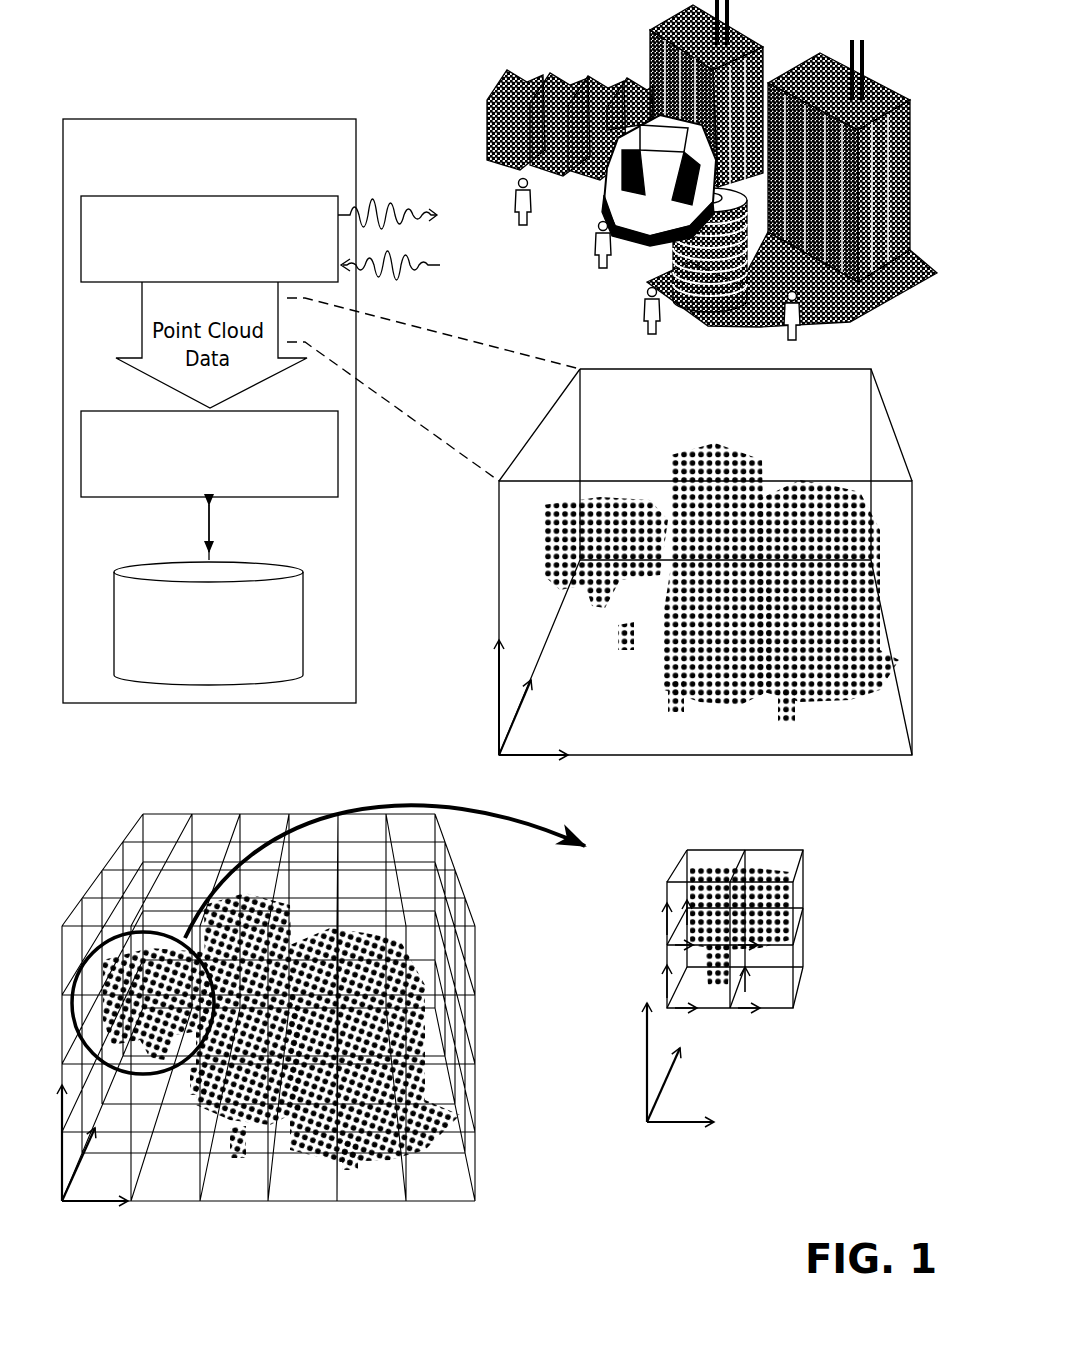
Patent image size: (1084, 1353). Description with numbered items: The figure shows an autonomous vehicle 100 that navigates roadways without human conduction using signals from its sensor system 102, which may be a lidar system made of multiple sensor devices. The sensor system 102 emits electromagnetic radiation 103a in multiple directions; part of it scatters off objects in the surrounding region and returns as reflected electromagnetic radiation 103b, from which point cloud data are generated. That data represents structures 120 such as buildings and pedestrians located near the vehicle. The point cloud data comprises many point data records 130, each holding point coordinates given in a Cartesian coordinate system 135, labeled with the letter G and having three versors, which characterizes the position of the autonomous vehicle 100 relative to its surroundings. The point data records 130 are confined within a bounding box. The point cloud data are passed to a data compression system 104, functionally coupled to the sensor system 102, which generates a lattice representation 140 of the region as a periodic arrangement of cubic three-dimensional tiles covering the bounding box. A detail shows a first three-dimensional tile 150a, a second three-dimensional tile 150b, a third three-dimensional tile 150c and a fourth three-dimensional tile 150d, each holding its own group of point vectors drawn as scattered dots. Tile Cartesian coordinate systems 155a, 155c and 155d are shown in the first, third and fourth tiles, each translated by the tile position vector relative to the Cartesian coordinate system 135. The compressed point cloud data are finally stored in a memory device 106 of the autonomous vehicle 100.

The autonomous vehicle 100 is at (206, 118).
The sensor system 102 is at (140, 196).
The electromagnetic radiation 103a is at (394, 172).
The reflected electromagnetic radiation 103b is at (431, 290).
The data compression system 104 is at (139, 411).
The memory device 106 is at (150, 560).
The structures 120 is at (889, 50).
The point data records 130 is at (776, 443).
The Cartesian coordinate system 135 is at (470, 726).
The lattice representation 140 is at (128, 793).
The first 3D tile 150a is at (698, 855).
The second 3D tile 150b is at (788, 855).
The third 3D tile 150c is at (672, 955).
The fourth 3D tile 150d is at (800, 963).
The tile Cartesian coordinate system 155a is at (655, 927).
The tile Cartesian coordinate system 155c is at (650, 985).
The tile Cartesian coordinate system 155d is at (743, 1022).